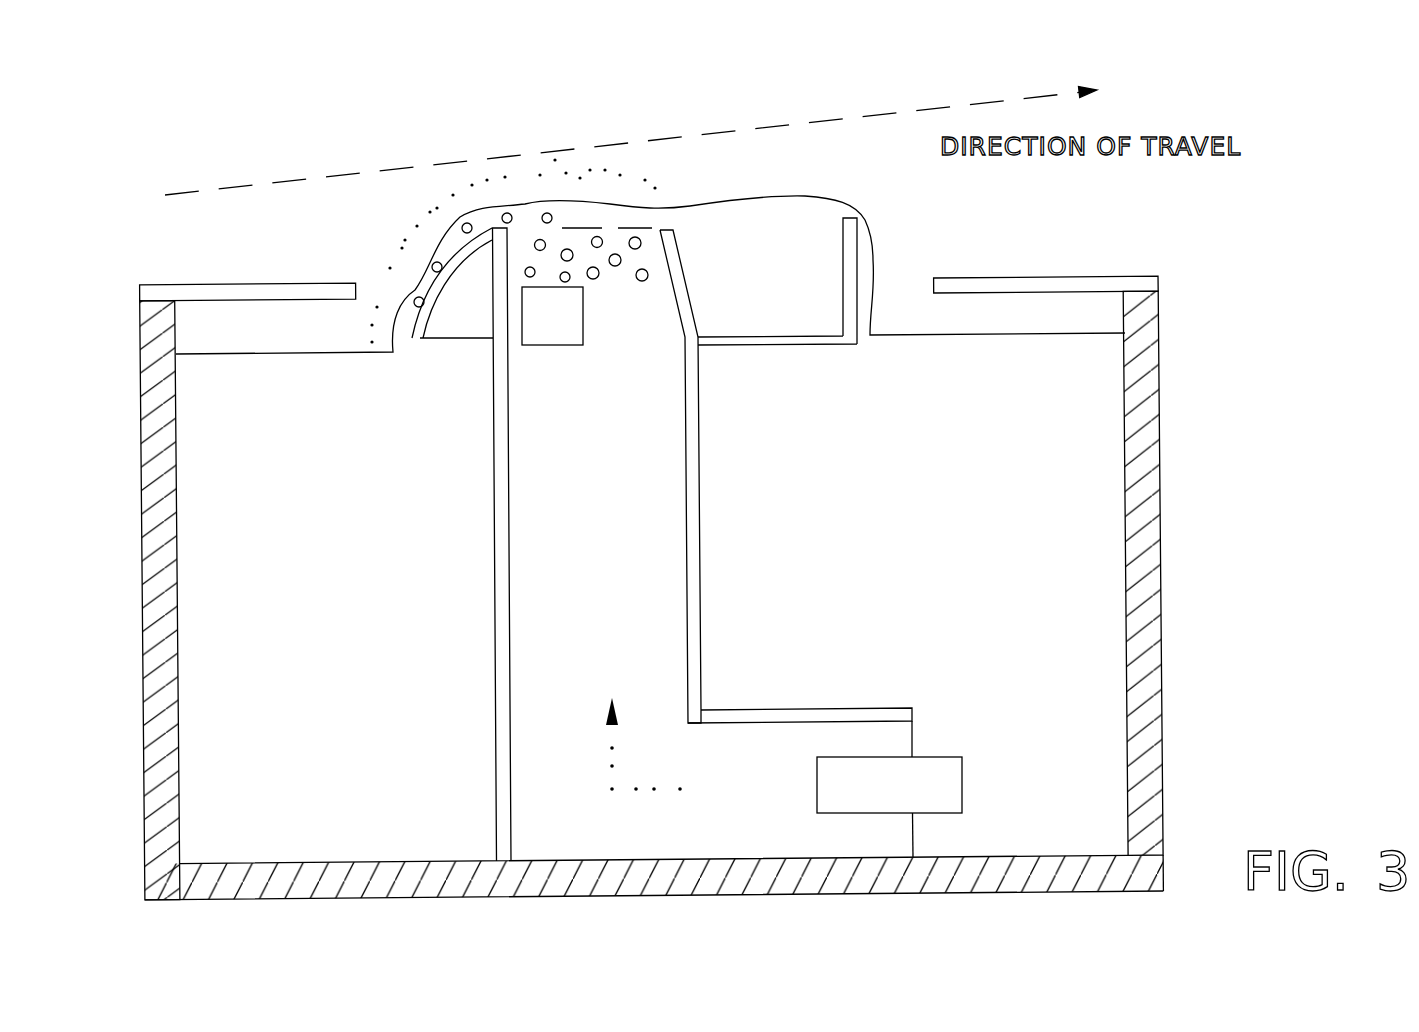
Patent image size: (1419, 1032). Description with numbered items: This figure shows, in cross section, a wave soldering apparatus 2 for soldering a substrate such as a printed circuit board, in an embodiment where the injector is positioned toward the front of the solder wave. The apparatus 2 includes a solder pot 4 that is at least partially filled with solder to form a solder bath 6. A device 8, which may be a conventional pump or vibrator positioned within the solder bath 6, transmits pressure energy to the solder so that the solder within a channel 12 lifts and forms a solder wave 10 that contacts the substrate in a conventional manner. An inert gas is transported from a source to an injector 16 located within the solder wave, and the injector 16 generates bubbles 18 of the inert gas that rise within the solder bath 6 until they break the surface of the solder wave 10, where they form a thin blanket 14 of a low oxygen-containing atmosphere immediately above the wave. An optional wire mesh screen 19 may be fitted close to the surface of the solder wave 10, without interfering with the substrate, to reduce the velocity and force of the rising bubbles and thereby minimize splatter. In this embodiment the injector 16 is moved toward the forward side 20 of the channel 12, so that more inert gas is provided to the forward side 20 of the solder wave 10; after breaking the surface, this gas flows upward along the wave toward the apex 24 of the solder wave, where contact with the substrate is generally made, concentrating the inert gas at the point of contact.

The wave soldering apparatus 2 is at (1210, 344).
The solder pot 4 is at (1165, 459).
The solder bath 6 is at (1105, 585).
The device for forming solder wave 8 is at (925, 787).
The solder wave 10 is at (767, 185).
The channel 12 is at (712, 619).
The blanket of low oxygen-containing atmosphere 14 is at (377, 275).
The injector 16 is at (596, 322).
The bubbles 18 is at (524, 229).
The wire mesh screen 19 is at (585, 212).
The forward side of channel 20 is at (516, 413).
The apex of solder wave 24 is at (548, 186).